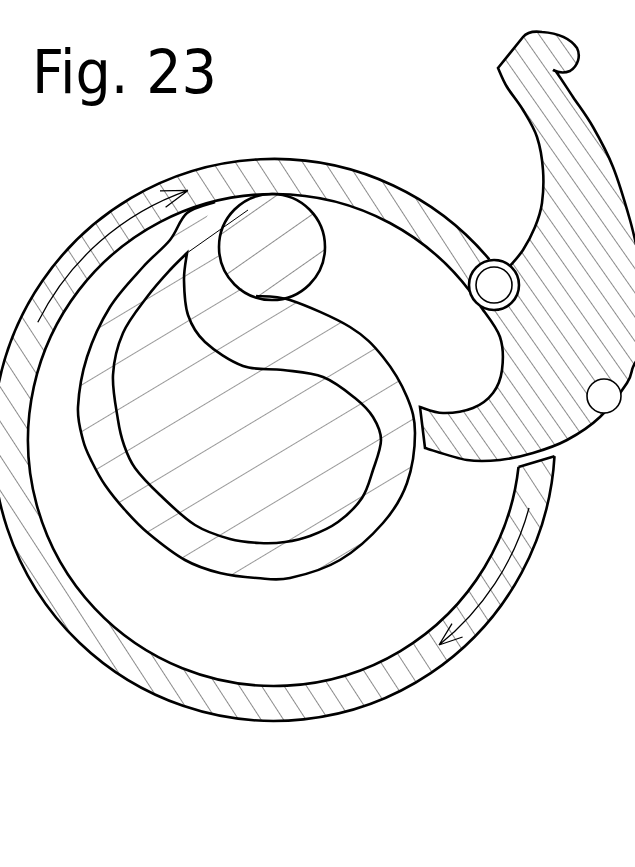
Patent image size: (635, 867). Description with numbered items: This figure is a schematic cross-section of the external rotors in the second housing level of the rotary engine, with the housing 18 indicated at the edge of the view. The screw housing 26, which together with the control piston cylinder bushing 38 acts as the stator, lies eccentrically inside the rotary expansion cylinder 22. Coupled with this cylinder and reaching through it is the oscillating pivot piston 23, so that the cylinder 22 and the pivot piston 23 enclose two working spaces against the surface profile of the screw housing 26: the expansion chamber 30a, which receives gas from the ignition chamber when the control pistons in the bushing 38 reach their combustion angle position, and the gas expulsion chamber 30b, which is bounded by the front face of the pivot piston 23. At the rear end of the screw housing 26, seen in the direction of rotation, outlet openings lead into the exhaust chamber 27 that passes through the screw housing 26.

The housing 18 is at (0, 727).
The rotary expansion cylinder 22 is at (377, 703).
The pivot piston 23 is at (566, 241).
The screw housing 26 is at (330, 350).
The exhaust chamber 27 is at (222, 430).
The expansion chamber 30a is at (427, 322).
The gas expulsion chamber 30b is at (365, 607).
The control piston cylinder bushing 38 is at (272, 247).